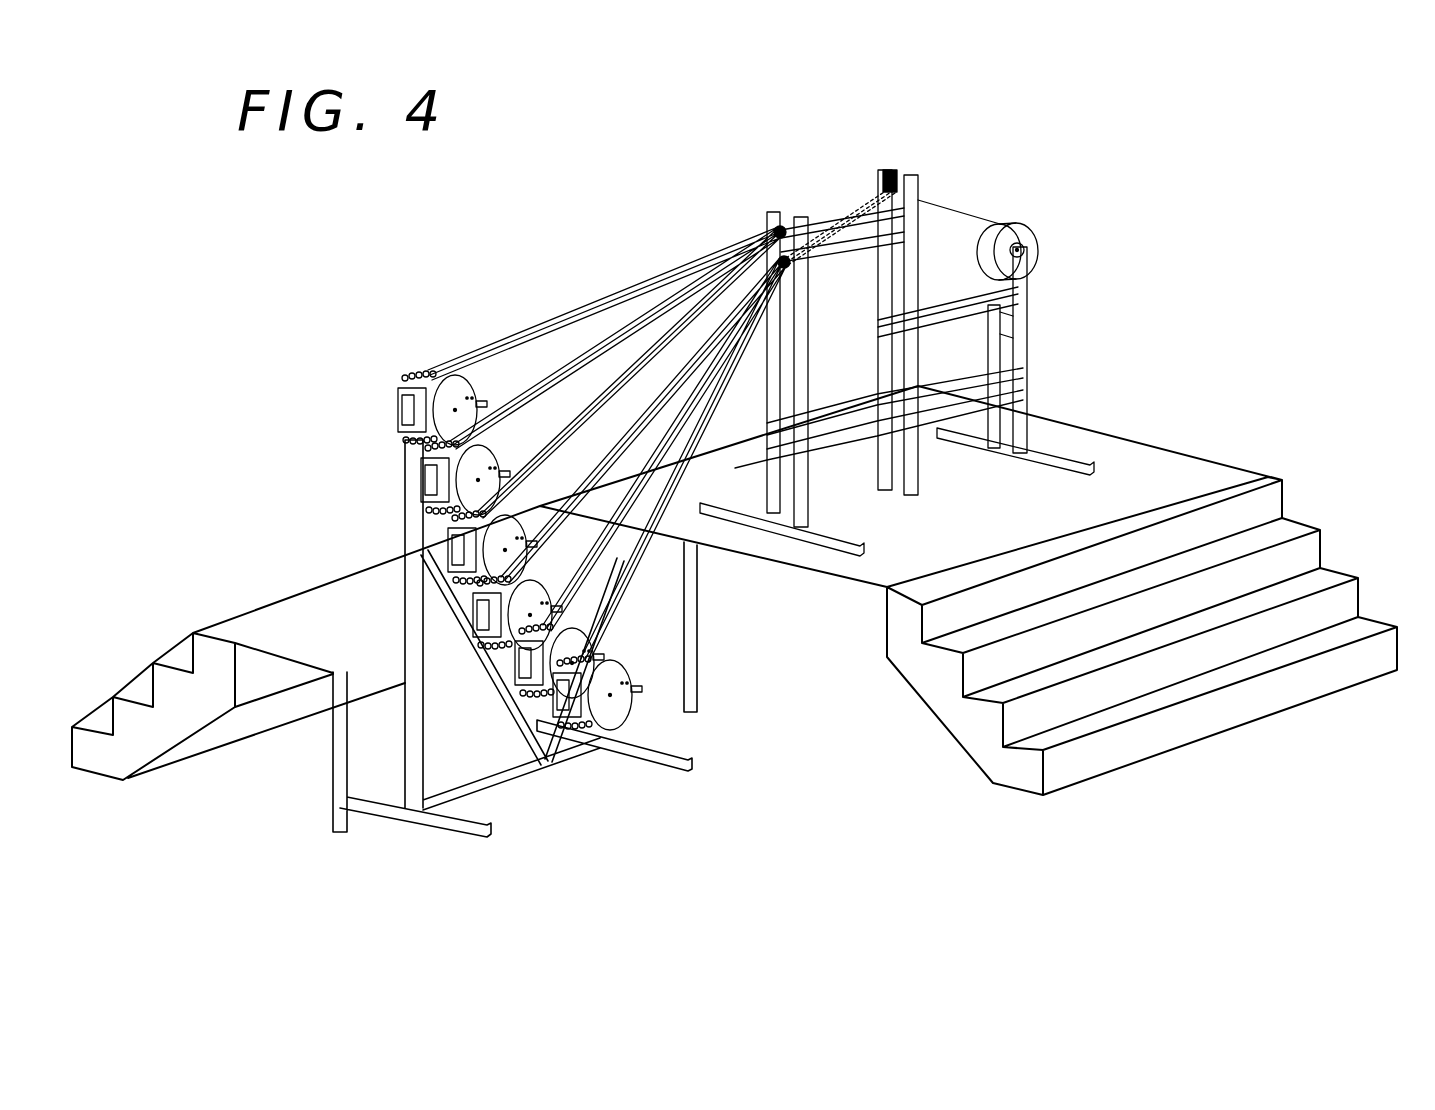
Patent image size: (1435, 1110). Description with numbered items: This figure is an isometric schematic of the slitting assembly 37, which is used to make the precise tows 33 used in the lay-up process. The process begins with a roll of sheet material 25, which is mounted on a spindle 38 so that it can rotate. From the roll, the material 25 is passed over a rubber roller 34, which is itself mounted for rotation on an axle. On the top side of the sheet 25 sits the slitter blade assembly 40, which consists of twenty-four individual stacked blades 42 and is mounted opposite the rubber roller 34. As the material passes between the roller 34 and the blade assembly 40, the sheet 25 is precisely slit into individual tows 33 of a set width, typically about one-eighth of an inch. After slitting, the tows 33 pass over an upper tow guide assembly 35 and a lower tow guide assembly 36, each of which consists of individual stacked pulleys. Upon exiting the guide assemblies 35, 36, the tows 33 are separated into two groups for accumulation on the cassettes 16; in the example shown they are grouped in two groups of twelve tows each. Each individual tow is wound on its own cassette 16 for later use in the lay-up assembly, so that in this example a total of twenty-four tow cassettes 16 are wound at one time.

The cassettes 16 is at (437, 378).
The sheet of material 25 is at (1018, 233).
The tows 33 is at (553, 322).
The rubber roller 34 is at (898, 202).
The upper tow guide assembly 35 is at (787, 223).
The lower tow guide assembly 36 is at (790, 270).
The slitting assembly 37 is at (812, 717).
The spindle 38 is at (1023, 245).
The slitter blade assembly 40 is at (907, 169).
The stacked blades 42 is at (887, 173).